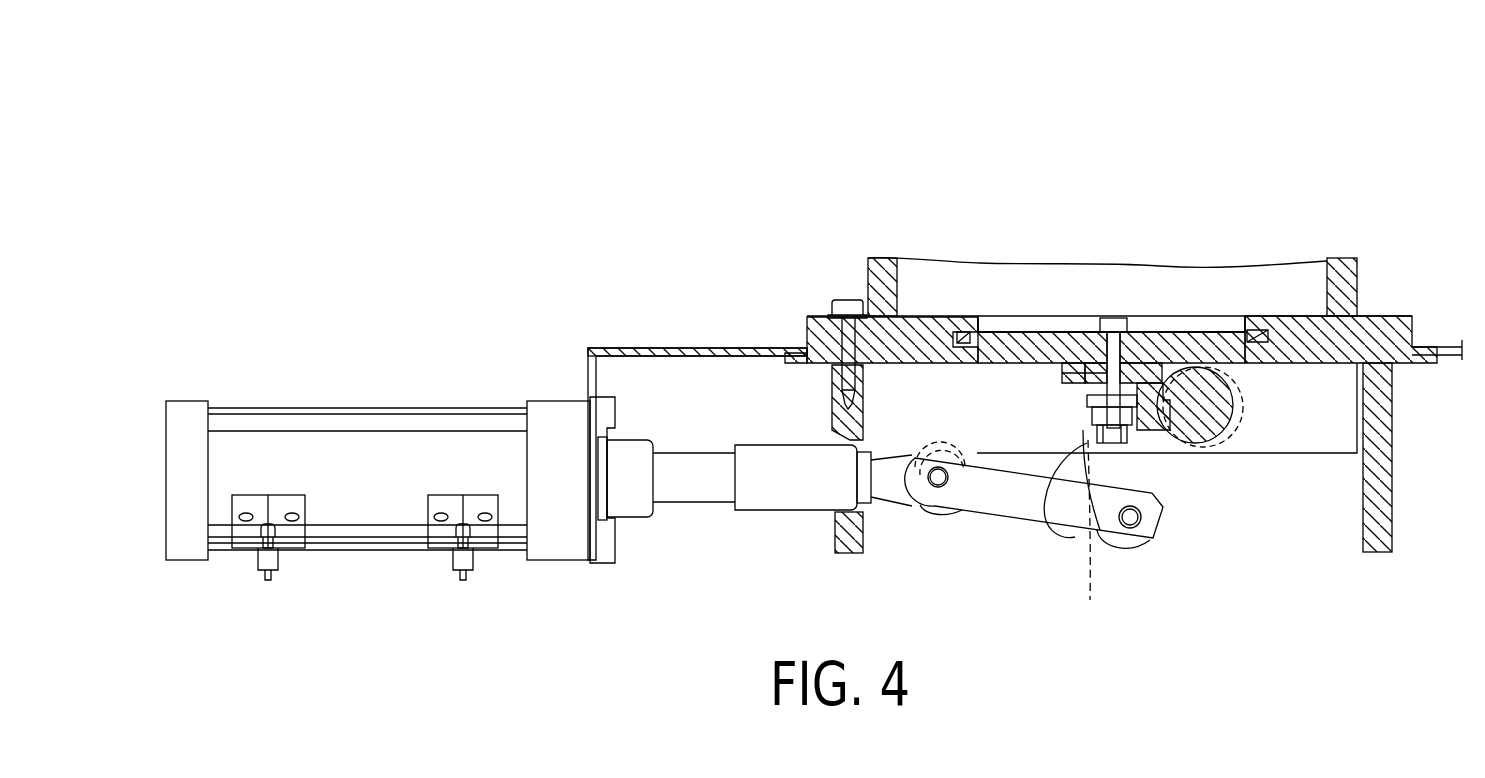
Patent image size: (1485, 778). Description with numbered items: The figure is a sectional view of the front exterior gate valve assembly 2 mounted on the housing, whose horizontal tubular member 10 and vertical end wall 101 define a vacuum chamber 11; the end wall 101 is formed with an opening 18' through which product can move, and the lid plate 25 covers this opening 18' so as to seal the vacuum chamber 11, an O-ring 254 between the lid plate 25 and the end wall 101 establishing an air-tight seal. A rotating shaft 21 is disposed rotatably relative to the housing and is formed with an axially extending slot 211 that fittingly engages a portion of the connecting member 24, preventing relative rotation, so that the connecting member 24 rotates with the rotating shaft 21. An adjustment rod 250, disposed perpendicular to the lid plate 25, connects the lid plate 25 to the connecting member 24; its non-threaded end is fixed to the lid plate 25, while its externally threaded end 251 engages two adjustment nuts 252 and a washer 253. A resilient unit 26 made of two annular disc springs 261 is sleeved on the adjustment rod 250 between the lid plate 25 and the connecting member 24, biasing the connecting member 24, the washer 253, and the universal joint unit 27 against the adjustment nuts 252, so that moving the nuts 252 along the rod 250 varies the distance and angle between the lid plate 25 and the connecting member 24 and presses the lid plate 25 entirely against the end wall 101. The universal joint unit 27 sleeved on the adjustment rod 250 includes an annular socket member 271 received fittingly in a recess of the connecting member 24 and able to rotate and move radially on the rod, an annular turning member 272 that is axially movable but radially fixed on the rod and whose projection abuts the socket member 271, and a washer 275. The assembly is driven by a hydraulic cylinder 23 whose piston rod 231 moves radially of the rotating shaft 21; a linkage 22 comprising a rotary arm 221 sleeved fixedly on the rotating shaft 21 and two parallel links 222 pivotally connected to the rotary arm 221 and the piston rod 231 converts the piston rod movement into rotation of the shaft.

The front exterior gate valve assembly 2 is at (1250, 387).
The horizontal tubular member 10 is at (1362, 270).
The vacuum chamber 11 is at (1318, 283).
The vertical end wall 101 is at (1318, 363).
The opening 18' is at (1111, 274).
The rotating shaft 21 is at (1215, 372).
The axially extending slot 211 is at (1215, 445).
The linkage 22 is at (950, 430).
The rotary arm 221 is at (1203, 470).
The parallel link 222 is at (1000, 508).
The hydraulic cylinder 23 is at (305, 452).
The piston rod 231 is at (693, 467).
The connecting member 24 is at (1075, 432).
The lid plate 25 is at (1137, 395).
The adjustment rod 250 is at (1122, 440).
The externally threaded end 251 is at (1090, 540).
The adjustment nut 252 is at (1122, 446).
The washer 253 is at (1085, 445).
The O-ring 254 is at (1098, 383).
The resilient unit 26 is at (1150, 395).
The annular disc spring 261 is at (1092, 385).
The universal joint unit 27 is at (1075, 417).
The annular socket member 271 is at (1050, 385).
The annular turning member 272 is at (1078, 382).
The washer 275 is at (1186, 345).